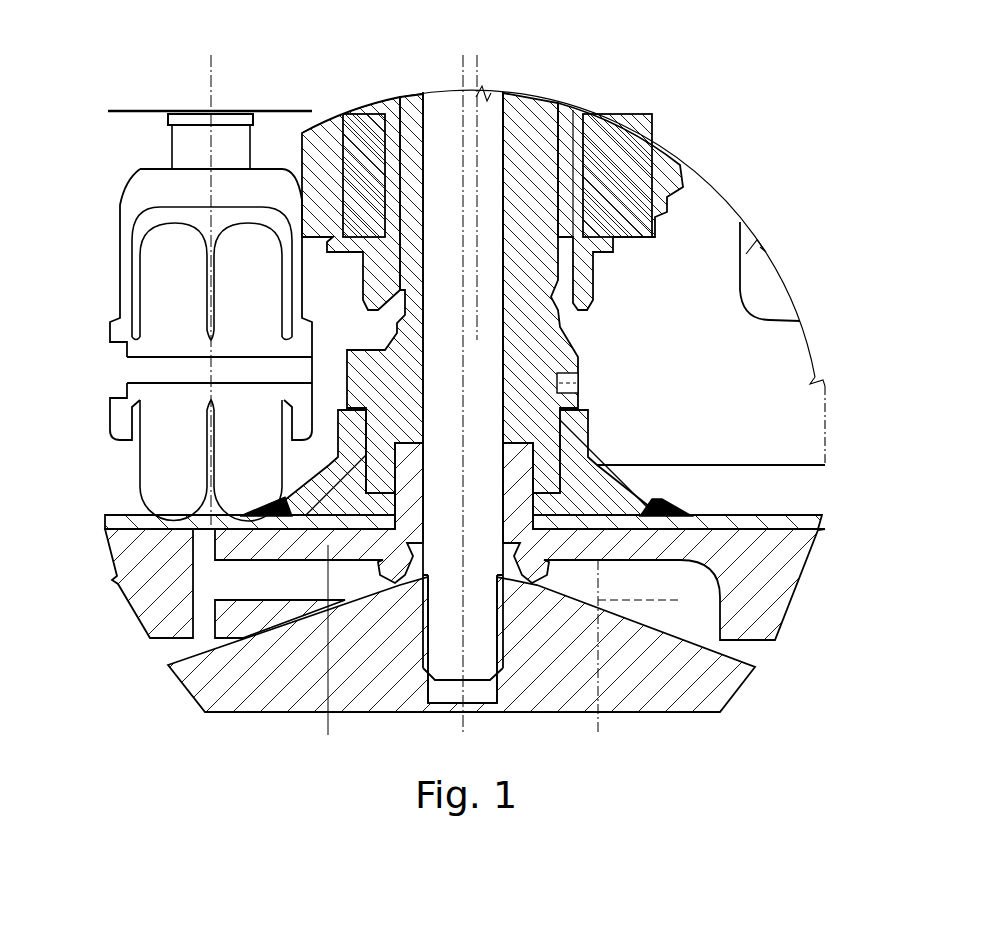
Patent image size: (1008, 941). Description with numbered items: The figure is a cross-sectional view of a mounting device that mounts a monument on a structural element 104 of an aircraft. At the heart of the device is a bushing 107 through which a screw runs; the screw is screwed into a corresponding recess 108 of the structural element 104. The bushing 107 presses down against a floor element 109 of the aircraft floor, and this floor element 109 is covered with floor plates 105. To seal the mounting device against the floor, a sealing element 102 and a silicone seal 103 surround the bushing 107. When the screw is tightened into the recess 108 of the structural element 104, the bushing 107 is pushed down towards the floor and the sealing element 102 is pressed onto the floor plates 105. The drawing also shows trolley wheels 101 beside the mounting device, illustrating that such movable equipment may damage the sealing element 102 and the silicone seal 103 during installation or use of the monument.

The trolley wheels 101 is at (163, 297).
The sealing element 102 is at (615, 495).
The silicone seal 103 is at (660, 512).
The structural element 104 is at (700, 684).
The floor plates 105 is at (108, 517).
The bushing 107 is at (562, 333).
The recess 108 is at (480, 693).
The floor element 109 is at (813, 580).